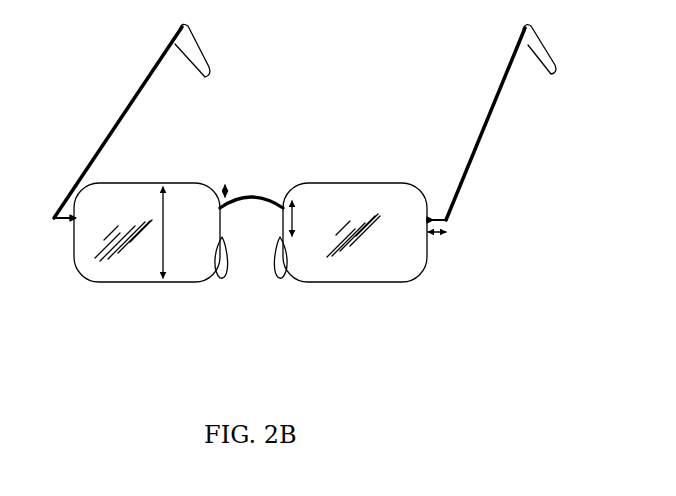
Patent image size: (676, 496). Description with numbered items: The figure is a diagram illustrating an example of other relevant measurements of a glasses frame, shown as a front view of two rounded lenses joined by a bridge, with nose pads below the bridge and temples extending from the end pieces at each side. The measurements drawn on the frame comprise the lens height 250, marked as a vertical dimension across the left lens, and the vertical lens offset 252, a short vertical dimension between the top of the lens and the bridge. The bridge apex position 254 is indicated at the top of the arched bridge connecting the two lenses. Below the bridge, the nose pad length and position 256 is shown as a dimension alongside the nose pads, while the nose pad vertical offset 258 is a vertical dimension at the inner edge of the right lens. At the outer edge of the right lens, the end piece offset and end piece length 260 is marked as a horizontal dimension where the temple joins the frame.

The lens height 250 is at (164, 200).
The vertical lens offset 252 is at (228, 189).
The bridge apex position 254 is at (249, 199).
The nose pad length and position 256 is at (237, 244).
The nose pad vertical offset 258 is at (296, 217).
The end piece offset and end piece length 260 is at (440, 238).